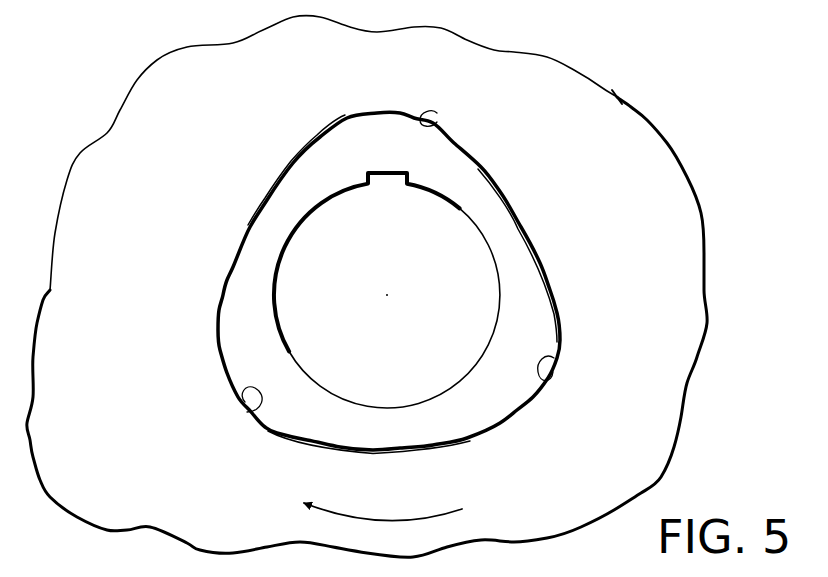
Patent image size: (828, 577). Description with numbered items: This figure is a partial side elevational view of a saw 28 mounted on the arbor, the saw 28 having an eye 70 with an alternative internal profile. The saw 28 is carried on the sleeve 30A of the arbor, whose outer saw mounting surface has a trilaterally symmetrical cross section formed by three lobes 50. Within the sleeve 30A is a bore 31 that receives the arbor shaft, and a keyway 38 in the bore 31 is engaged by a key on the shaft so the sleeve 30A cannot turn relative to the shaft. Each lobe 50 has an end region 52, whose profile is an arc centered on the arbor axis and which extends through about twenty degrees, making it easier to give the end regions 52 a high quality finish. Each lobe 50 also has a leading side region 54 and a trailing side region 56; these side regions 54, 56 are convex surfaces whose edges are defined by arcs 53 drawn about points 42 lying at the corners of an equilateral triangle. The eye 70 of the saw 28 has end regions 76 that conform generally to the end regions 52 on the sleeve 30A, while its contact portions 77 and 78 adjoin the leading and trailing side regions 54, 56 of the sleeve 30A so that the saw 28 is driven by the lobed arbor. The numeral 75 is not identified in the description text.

The saw 28 is at (618, 96).
The sleeve 30A is at (556, 285).
The bore 31 is at (405, 404).
The keyway 38 is at (398, 176).
The points 42 is at (393, 520).
The lobes 50 is at (404, 140).
The end region 52 is at (386, 112).
The arcs 53 is at (248, 223).
The leading side region 54 is at (221, 305).
The trailing side region 56 is at (292, 161).
The eye 70 is at (526, 247).
The corner seal 75 is at (247, 243).
The end regions 76 is at (437, 113).
The contact portion 77 is at (228, 298).
The contact portion 78 is at (310, 142).